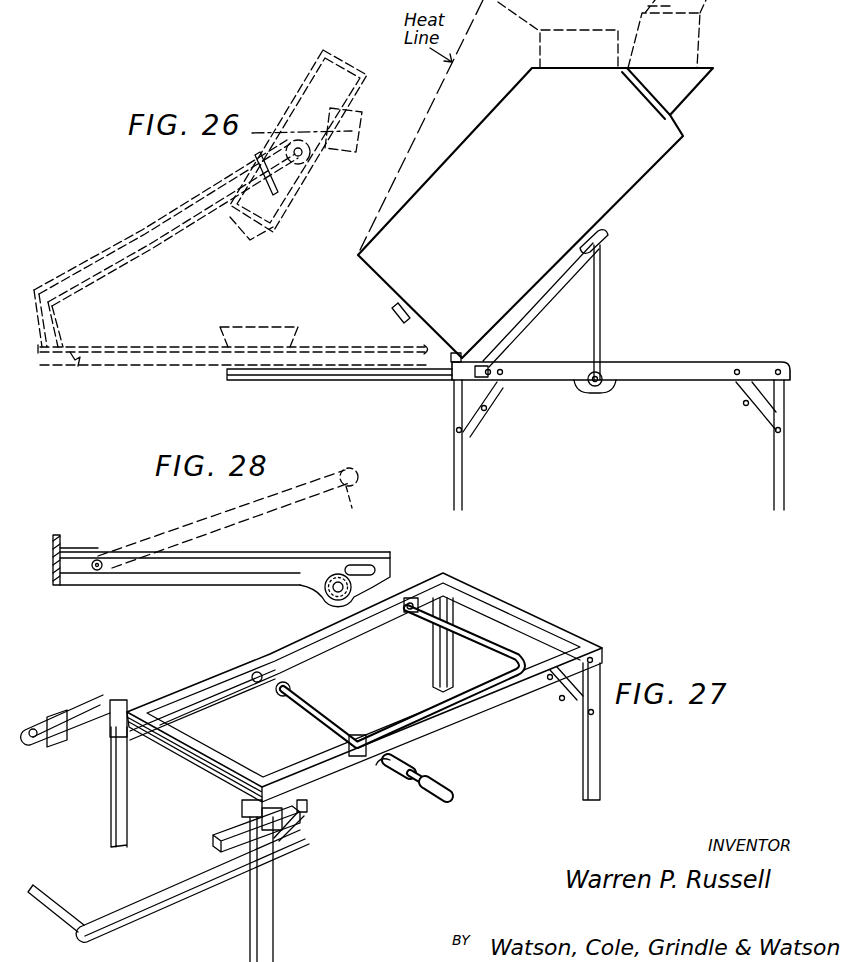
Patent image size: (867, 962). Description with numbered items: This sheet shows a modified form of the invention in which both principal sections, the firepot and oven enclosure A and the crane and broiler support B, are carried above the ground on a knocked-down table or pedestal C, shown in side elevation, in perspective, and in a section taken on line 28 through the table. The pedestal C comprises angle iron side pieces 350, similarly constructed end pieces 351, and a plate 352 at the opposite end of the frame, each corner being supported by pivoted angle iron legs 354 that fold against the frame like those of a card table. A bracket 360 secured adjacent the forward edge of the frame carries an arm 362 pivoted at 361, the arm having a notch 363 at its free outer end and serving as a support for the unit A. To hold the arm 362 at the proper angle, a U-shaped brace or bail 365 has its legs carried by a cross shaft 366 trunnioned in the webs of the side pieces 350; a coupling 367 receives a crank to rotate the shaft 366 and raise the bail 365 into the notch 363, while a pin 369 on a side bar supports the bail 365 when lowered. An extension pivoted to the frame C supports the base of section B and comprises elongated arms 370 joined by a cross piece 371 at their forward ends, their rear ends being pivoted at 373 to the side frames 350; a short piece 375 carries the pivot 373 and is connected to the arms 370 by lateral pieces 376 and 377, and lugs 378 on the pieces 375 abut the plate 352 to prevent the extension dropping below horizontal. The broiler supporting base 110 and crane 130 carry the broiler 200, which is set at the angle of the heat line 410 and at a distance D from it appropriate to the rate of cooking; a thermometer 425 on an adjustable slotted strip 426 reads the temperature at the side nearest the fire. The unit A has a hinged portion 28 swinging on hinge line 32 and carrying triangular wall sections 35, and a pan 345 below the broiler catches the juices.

In FIG. 27, the hinged portion 28 is at (296, 684).
In FIG. 26, the hinge line 32 is at (630, 66).
In FIG. 26, the triangular section 35 is at (688, 76).
In FIG. 26, the broiler supporting base 110 is at (117, 348).
In FIG. 26, the crane 130 is at (124, 240).
In FIG. 26, the broiler 200 is at (322, 84).
In FIG. 26, the pan 345 is at (245, 330).
In FIG. 26, the angle iron side pieces 350 is at (682, 368).
In FIG. 28, the angle iron side pieces 350 is at (297, 558).
In FIG. 27, the angle iron side pieces 350 is at (280, 645).
In FIG. 26, the end pieces 351 is at (790, 366).
In FIG. 27, the end pieces 351 is at (557, 627).
In FIG. 28, the plate 352 is at (53, 565).
In FIG. 27, the plate 352 is at (205, 778).
In FIG. 26, the pivoted angle iron legs 354 is at (466, 455).
In FIG. 27, the pivoted angle iron legs 354 is at (470, 586).
In FIG. 28, the bracket 360 is at (75, 550).
In FIG. 28, the pivot 361 is at (100, 570).
In FIG. 26, the arm 362 is at (545, 292).
In FIG. 28, the arm 362 is at (257, 542).
In FIG. 27, the arm 362 is at (219, 705).
In FIG. 26, the notch 363 is at (580, 243).
In FIG. 28, the notch 363 is at (352, 565).
In FIG. 27, the notch 363 is at (284, 699).
In FIG. 26, the U-shaped brace 365 is at (601, 288).
In FIG. 27, the U-shaped brace 365 is at (490, 637).
In FIG. 26, the cross shaft 366 is at (594, 387).
In FIG. 28, the cross shaft 366 is at (328, 592).
In FIG. 27, the coupling 367 is at (430, 790).
In FIG. 27, the pin 369 is at (411, 598).
In FIG. 26, the elongated arms 370 is at (343, 374).
In FIG. 27, the elongated arms 370 is at (33, 740).
In FIG. 27, the cross piece 371 is at (62, 913).
In FIG. 26, the pivot 373 is at (492, 369).
In FIG. 27, the pivot 373 is at (300, 803).
In FIG. 27, the short piece 375 is at (90, 737).
In FIG. 27, the lateral piece 376 is at (213, 846).
In FIG. 27, the lateral piece 377 is at (50, 712).
In FIG. 27, the lugs 378 is at (122, 700).
In FIG. 26, the heat line 410 is at (442, 82).
In FIG. 26, the thermometer 425 is at (343, 150).
In FIG. 26, the adjustable slotted strip 426 is at (300, 139).
In FIG. 26, the firepot and oven enclosure A is at (625, 178).
In FIG. 26, the crane and broiler support B is at (172, 216).
In FIG. 26, the collapsible frame C is at (653, 360).
In FIG. 27, the collapsible frame C is at (519, 604).
In FIG. 26, the distance D is at (375, 211).